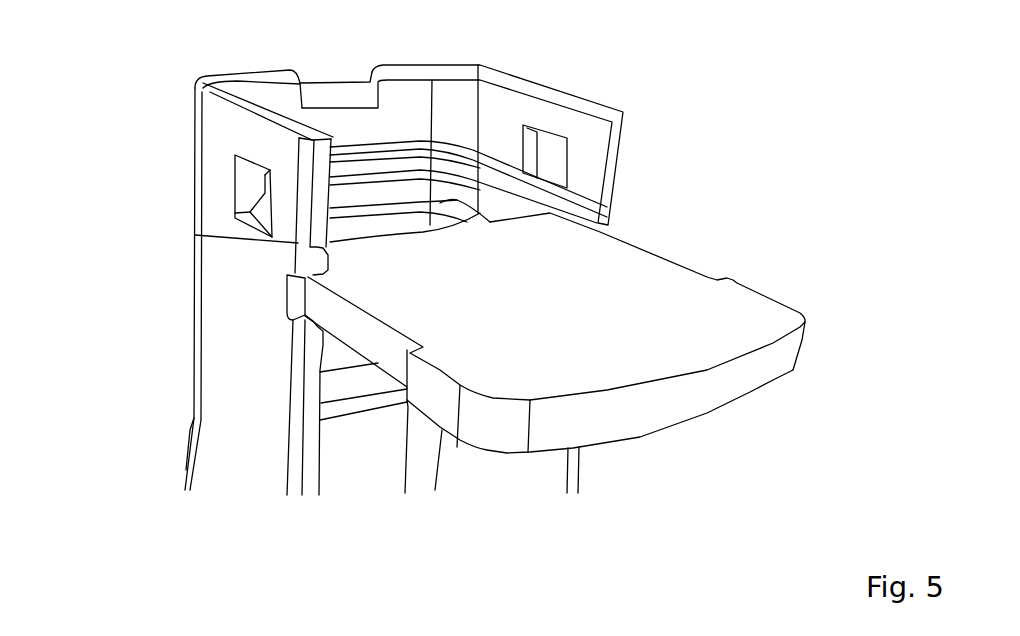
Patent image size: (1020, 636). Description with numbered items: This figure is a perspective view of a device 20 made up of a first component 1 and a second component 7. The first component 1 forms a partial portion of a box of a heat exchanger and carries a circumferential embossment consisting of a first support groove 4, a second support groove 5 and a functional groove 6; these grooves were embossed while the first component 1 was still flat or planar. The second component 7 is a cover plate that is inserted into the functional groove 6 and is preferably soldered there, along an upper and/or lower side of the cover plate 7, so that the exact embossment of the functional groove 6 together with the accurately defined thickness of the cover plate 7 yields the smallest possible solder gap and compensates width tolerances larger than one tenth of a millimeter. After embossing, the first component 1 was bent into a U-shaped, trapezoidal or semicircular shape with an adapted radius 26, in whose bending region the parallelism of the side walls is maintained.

The device 20 is at (92, 66).
The first component 1 is at (218, 172).
The first support groove 4 is at (317, 247).
The functional groove 6 is at (293, 298).
The second support groove 5 is at (305, 352).
The adapted radius 26 is at (450, 120).
The second component 7 is at (612, 285).